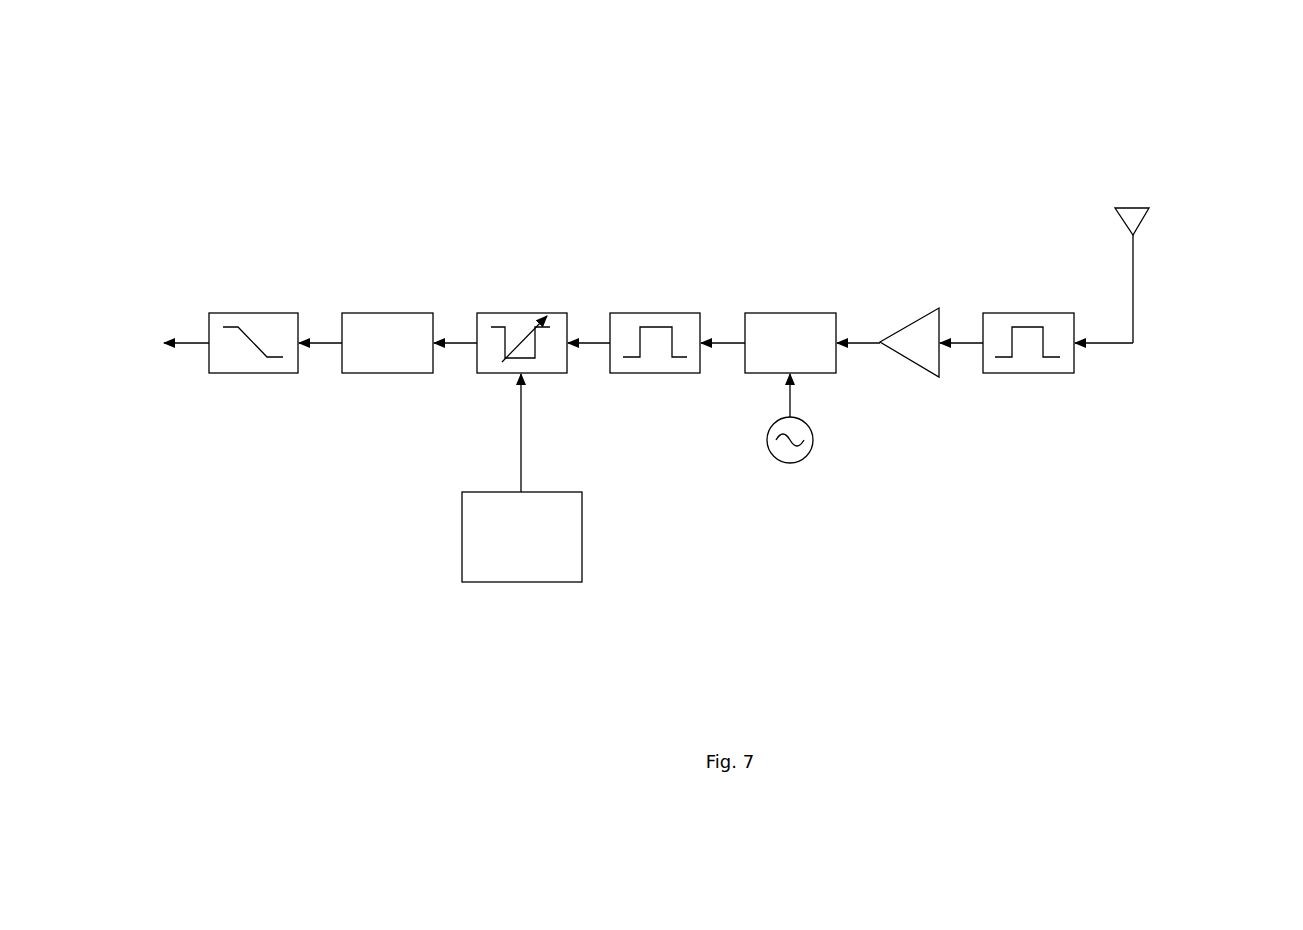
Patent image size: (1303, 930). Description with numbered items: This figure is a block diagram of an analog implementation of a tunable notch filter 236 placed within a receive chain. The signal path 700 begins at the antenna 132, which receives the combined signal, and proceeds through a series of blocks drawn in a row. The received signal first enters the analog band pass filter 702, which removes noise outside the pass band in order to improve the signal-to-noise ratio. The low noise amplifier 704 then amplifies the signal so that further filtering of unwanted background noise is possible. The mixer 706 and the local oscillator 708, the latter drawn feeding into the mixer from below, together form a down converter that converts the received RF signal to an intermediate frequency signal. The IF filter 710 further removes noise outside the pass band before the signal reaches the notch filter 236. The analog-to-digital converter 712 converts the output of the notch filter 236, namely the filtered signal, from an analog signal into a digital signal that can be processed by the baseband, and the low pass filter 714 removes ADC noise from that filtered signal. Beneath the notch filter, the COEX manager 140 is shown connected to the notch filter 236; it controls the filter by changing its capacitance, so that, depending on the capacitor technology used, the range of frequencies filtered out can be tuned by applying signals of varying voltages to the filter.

The signal path 700 is at (390, 86).
The antenna 132 is at (1133, 268).
The analog band pass filter 702 is at (1028, 313).
The low noise amplifier 704 is at (914, 320).
The mixer 706 is at (796, 313).
The local oscillator 708 is at (813, 445).
The IF filter 710 is at (662, 313).
The tunable notch filter 236 is at (534, 313).
The analog-to-digital converter 712 is at (386, 313).
The low pass filter 714 is at (251, 313).
The COEX manager 140 is at (522, 478).